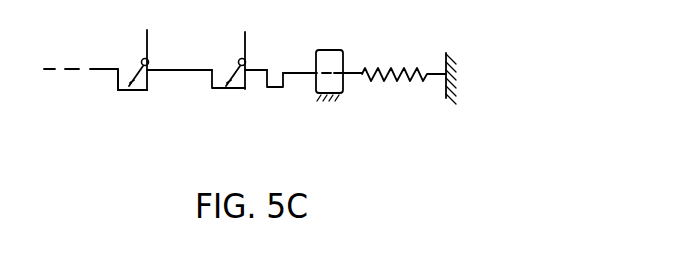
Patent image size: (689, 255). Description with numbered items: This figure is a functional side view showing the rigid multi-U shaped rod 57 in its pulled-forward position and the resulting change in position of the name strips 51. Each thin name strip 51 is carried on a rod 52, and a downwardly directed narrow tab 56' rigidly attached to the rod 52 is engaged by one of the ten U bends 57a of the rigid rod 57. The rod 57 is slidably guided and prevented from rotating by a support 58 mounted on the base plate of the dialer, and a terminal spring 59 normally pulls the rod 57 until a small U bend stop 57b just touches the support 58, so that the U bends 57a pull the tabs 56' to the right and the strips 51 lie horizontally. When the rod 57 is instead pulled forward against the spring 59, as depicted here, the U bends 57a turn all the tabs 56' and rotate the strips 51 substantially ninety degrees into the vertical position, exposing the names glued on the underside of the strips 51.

The strip 51 is at (246, 36).
The rod 52 is at (142, 58).
The tab 56' is at (196, 101).
The rigid multi-U shaped rod 57 is at (183, 71).
The U bend 57a is at (147, 90).
The U bend stop 57b is at (273, 88).
The support 58 is at (331, 55).
The terminal spring 59 is at (392, 66).